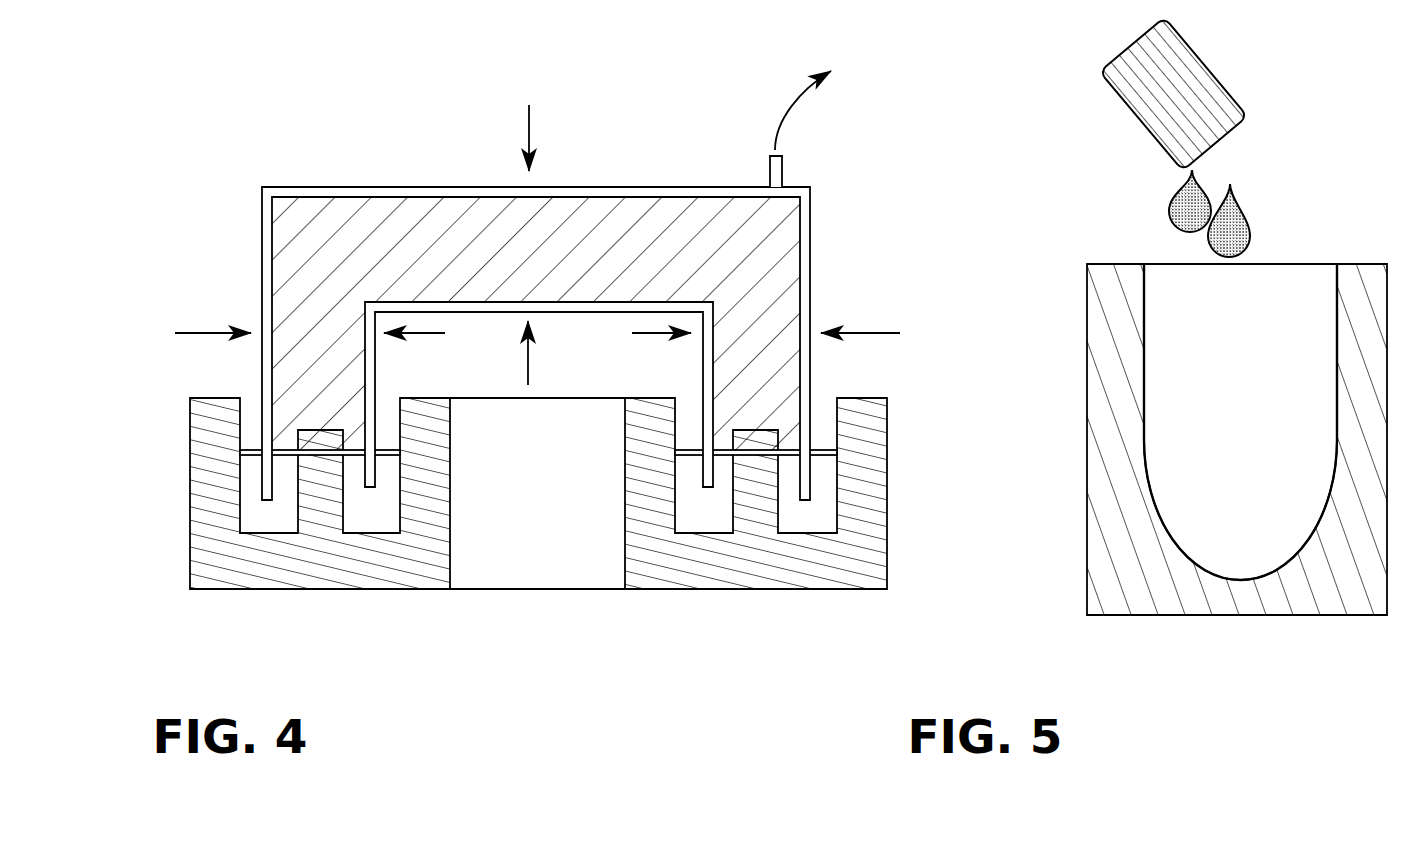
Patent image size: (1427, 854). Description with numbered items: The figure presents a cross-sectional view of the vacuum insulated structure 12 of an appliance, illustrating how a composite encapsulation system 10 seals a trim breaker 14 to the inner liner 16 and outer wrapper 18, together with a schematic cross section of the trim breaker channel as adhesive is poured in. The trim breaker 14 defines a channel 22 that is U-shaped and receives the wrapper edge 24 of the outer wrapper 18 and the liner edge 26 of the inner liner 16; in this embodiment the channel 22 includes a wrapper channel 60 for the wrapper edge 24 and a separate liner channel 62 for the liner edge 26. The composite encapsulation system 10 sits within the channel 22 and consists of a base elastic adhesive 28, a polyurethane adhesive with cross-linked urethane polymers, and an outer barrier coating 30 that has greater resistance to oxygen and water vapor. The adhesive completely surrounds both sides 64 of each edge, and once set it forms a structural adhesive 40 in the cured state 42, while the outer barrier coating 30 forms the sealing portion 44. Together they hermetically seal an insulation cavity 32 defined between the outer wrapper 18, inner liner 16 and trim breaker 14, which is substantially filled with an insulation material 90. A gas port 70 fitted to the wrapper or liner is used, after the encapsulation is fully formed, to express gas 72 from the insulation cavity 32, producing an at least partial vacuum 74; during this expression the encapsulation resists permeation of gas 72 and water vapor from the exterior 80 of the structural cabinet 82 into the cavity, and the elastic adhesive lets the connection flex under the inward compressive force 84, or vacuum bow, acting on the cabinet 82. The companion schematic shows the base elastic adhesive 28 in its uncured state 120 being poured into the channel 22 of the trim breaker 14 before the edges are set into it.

In FIG. 4, the composite encapsulation system 10 is at (168, 398).
In FIG. 4, the vacuum insulated structure 12 is at (395, 135).
In FIG. 4, the trim breaker 14 is at (182, 557).
In FIG. 5, the trim breaker 14 is at (1386, 253).
In FIG. 4, the inner liner 16 is at (717, 320).
In FIG. 4, the outer wrapper 18 is at (811, 231).
In FIG. 5, the channel 22 is at (1303, 310).
In FIG. 4, the wrapper edge 24 is at (803, 500).
In FIG. 4, the liner edge 26 is at (707, 488).
In FIG. 4, the base elastic adhesive 28 is at (804, 536).
In FIG. 5, the base elastic adhesive 28 is at (1233, 226).
In FIG. 4, the outer barrier coating 30 is at (258, 453).
In FIG. 4, the insulation cavity 32 is at (339, 218).
In FIG. 4, the structural adhesive 40 is at (368, 535).
In FIG. 4, the cured state 42 is at (406, 505).
In FIG. 4, the sealing portion 44 is at (818, 421).
In FIG. 4, the wrapper channel 60 is at (246, 487).
In FIG. 4, the liner channel 62 is at (685, 534).
In FIG. 4, the sides 64 is at (350, 457).
In FIG. 4, the gas port 70 is at (784, 166).
In FIG. 4, the gas 72 is at (782, 115).
In FIG. 4, the vacuum 74 is at (297, 248).
In FIG. 4, the exterior 80 is at (899, 248).
In FIG. 4, the structural cabinet 82 is at (214, 173).
In FIG. 4, the inward compressive force 84 is at (528, 123).
In FIG. 4, the insulation material 90 is at (687, 232).
In FIG. 5, the uncured state 120 is at (1158, 208).